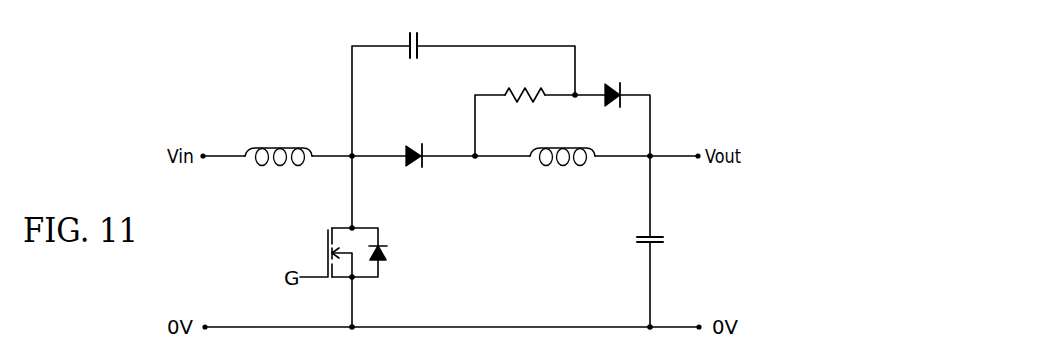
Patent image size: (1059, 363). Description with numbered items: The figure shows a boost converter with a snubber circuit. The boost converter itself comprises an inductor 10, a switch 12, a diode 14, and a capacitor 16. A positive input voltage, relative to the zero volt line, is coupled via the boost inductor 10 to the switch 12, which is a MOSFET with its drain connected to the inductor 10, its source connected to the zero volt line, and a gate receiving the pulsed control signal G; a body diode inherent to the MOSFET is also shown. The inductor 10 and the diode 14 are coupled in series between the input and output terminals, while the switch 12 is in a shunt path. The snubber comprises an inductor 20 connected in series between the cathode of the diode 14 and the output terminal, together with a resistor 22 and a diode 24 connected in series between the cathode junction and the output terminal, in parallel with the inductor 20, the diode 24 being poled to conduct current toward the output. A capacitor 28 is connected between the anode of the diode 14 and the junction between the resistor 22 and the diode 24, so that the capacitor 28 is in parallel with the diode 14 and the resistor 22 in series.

The inductor 10 is at (268, 168).
The switch 12 is at (313, 262).
The diode 14 is at (414, 170).
The capacitor 16 is at (636, 242).
The inductor 20 is at (565, 168).
The resistor 22 is at (516, 103).
The diode 24 is at (618, 77).
The capacitor 28 is at (413, 60).